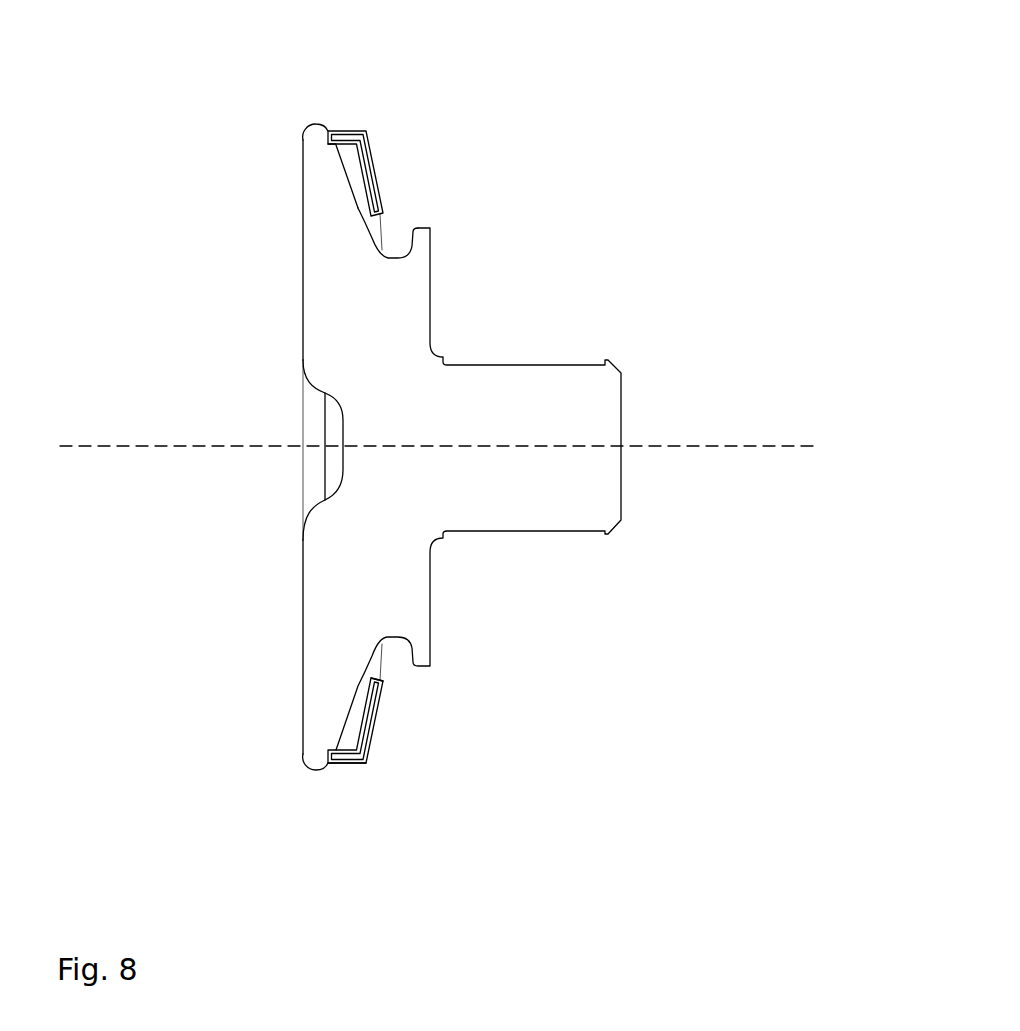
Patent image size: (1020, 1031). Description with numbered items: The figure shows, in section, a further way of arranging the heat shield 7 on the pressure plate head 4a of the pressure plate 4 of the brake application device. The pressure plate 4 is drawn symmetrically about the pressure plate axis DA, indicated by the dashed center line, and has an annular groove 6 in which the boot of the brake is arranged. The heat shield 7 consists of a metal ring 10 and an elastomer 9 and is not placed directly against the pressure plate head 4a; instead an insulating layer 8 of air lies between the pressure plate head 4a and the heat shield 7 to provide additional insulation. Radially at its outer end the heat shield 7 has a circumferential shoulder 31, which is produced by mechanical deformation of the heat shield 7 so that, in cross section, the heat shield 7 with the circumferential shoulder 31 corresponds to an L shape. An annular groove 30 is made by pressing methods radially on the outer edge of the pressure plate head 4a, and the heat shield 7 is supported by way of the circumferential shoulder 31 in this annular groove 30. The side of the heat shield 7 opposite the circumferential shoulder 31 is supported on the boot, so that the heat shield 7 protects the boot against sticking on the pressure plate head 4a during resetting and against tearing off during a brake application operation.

The pressure plate 4 is at (605, 645).
The pressure plate head 4a is at (303, 252).
The annular groove 6 is at (397, 257).
The heat shield 7 is at (348, 118).
The insulating layer 8 is at (336, 712).
The elastomer 9 is at (366, 762).
The metal ring 10 is at (371, 712).
The annular groove 30 is at (330, 128).
The circumferential shoulder 31 is at (318, 147).
The pressure plate axis DA is at (712, 446).